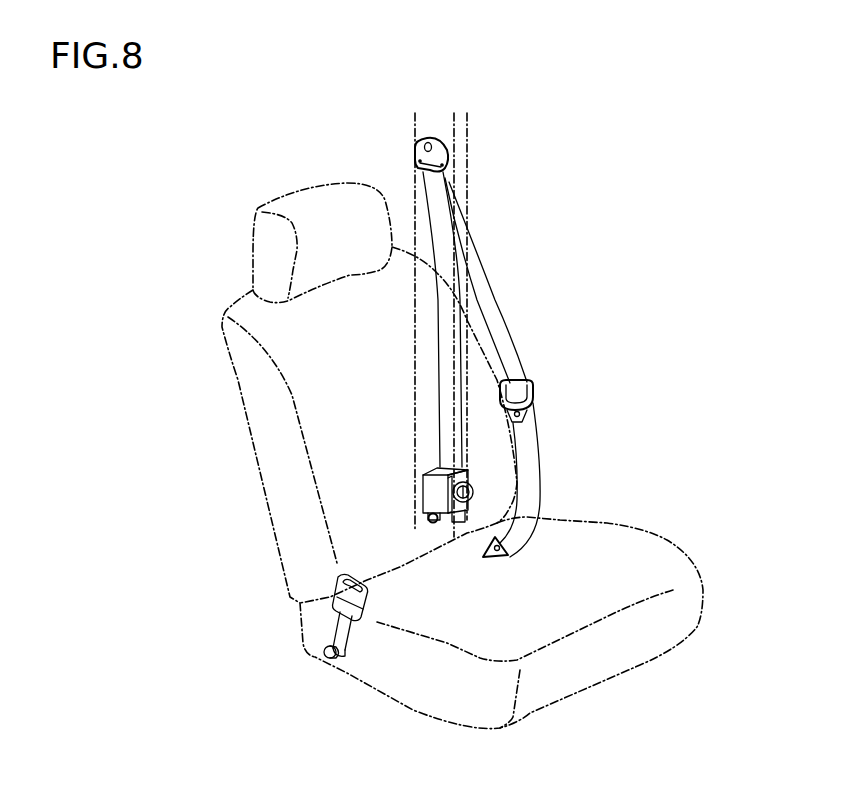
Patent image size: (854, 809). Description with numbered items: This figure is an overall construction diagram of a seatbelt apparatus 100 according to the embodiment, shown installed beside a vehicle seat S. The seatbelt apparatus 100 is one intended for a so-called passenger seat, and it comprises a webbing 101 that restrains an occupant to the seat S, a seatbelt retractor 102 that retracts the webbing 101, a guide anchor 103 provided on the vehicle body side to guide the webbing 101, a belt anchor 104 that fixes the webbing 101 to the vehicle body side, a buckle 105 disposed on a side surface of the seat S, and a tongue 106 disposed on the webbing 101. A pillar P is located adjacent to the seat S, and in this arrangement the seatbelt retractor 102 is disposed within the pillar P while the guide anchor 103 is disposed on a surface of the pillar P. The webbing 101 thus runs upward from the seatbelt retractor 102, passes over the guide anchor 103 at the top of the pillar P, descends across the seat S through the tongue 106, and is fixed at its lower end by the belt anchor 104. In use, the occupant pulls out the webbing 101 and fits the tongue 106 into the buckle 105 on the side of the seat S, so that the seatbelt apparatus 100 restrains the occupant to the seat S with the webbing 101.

The seat S is at (202, 277).
The pillar P is at (470, 129).
The seatbelt apparatus 100 is at (432, 398).
The webbing 101 is at (487, 290).
The seatbelt retractor 102 is at (425, 490).
The guide anchor 103 is at (412, 151).
The belt anchor 104 is at (500, 560).
The buckle 105 is at (334, 597).
The tongue 106 is at (535, 397).